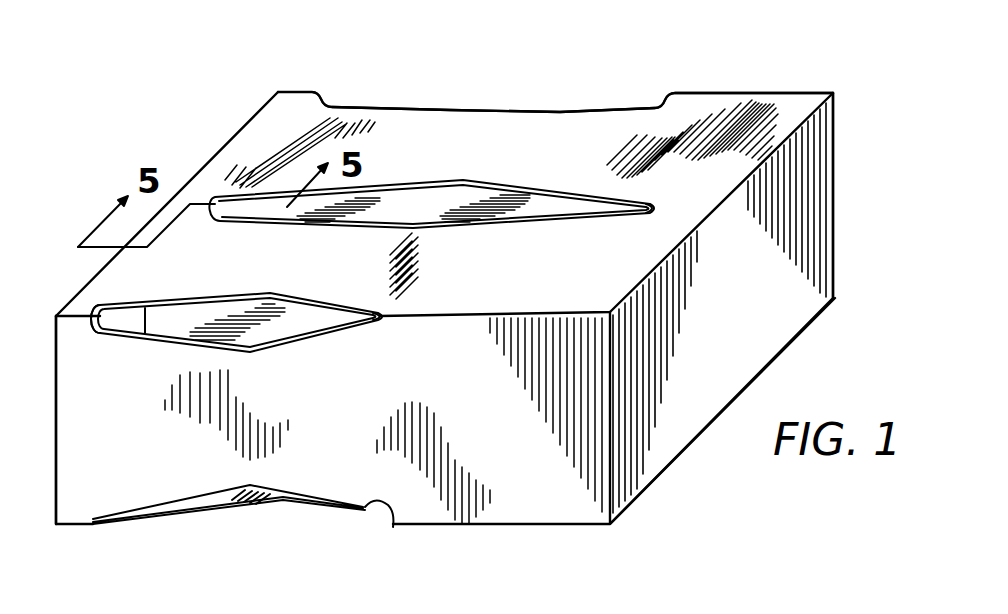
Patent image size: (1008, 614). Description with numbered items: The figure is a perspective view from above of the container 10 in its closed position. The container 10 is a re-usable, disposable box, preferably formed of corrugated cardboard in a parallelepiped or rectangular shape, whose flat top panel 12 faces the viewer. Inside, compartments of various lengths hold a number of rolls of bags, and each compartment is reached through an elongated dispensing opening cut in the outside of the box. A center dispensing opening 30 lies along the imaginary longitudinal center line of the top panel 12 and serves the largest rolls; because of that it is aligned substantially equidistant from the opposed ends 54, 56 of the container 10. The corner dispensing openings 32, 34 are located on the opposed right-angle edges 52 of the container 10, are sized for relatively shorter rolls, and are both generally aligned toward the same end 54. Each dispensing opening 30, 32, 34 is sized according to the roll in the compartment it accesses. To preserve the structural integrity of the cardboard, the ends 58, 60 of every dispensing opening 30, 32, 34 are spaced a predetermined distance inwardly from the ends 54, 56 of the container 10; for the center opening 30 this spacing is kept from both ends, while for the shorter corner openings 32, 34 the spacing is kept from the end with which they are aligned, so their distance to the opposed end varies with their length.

The container 10 is at (795, 75).
The top panel 12 is at (553, 143).
The center dispensing opening 30 is at (403, 180).
The corner dispensing opening 32 is at (383, 110).
The corner dispensing opening 34 is at (236, 296).
The edge 52 is at (725, 92).
The end 54 is at (56, 484).
The end 56 is at (836, 186).
The dispensing opening end 58 is at (318, 92).
The dispensing opening end 60 is at (670, 98).